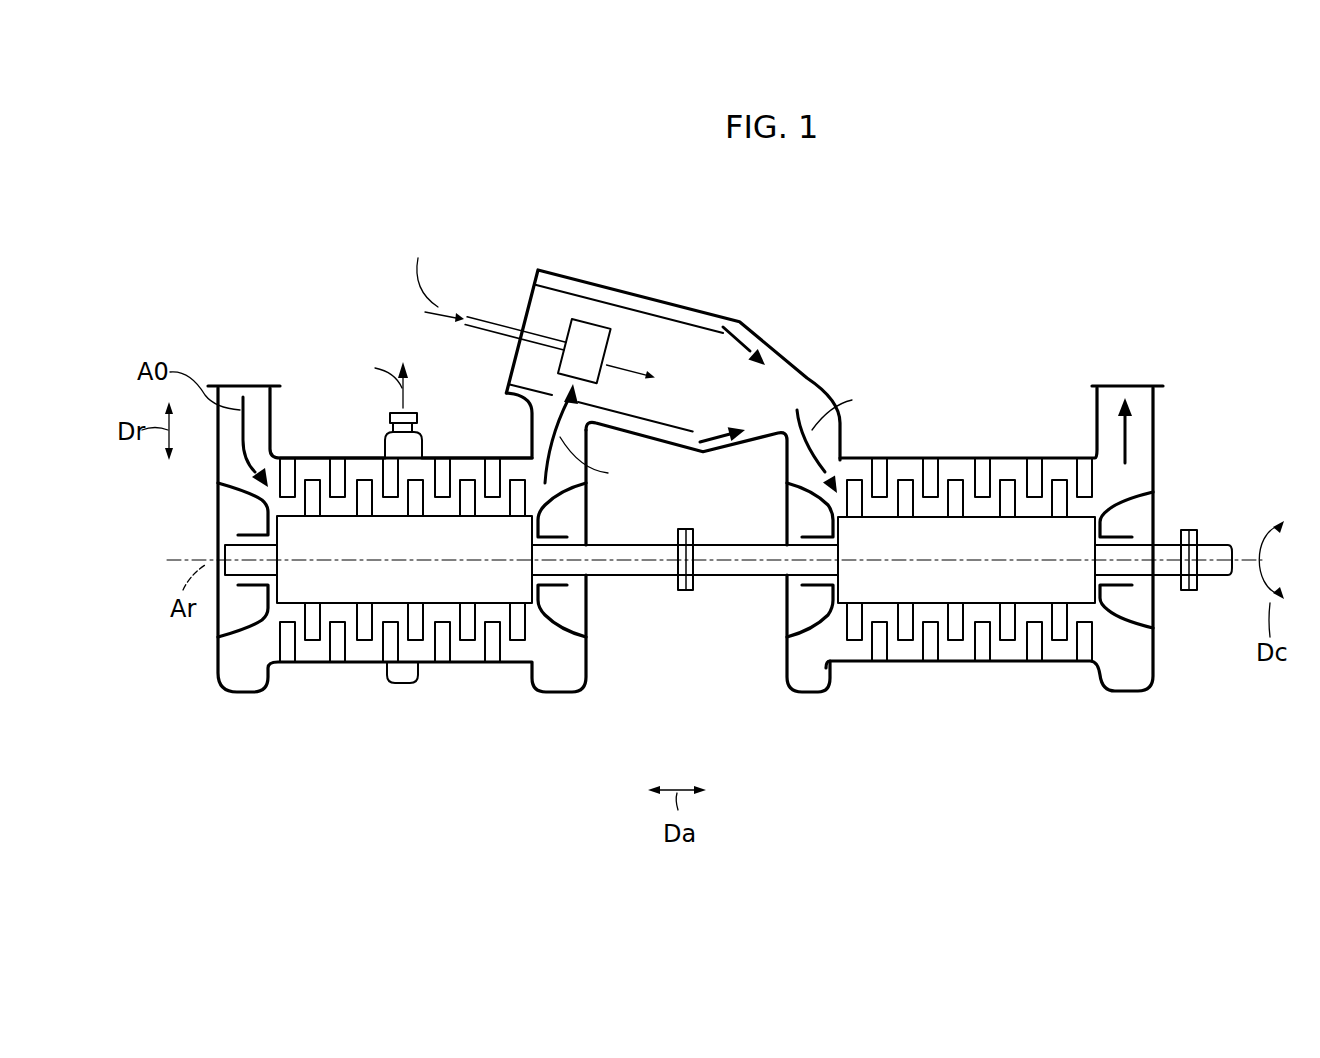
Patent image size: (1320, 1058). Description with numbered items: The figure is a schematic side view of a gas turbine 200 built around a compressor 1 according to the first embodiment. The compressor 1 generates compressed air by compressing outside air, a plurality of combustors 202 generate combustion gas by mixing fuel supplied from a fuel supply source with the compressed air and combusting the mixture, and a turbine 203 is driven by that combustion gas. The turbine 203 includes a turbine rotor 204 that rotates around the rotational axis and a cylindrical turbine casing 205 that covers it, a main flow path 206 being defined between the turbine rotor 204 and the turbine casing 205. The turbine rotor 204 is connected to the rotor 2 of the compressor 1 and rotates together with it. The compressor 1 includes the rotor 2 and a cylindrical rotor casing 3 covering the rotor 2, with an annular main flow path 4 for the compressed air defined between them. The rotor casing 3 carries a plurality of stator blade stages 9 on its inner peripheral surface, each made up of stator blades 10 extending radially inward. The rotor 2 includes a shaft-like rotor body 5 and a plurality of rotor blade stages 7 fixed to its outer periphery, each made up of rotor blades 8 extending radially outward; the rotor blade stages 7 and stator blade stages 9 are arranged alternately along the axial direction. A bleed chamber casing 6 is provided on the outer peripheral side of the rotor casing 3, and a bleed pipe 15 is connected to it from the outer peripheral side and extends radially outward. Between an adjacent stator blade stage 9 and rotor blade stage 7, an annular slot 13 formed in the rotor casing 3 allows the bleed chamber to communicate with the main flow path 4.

The compressor 1 is at (222, 710).
The rotor 2 is at (612, 780).
The rotor casing 3 is at (300, 663).
The main flow path 4 is at (323, 470).
The rotor body 5 is at (523, 592).
The bleed chamber casing 6 is at (413, 445).
The rotor blade stage 7 is at (463, 632).
The rotor blade 8 is at (517, 633).
The stator blade stage 9 is at (335, 653).
The stator blade 10 is at (383, 643).
The slot 13 is at (398, 462).
The bleed pipe 15 is at (415, 427).
The gas turbine 200 is at (1194, 333).
The combustor 202 is at (624, 282).
The turbine 203 is at (1139, 724).
The turbine rotor 204 is at (923, 603).
The turbine casing 205 is at (1010, 663).
The main flow path 206 is at (893, 647).